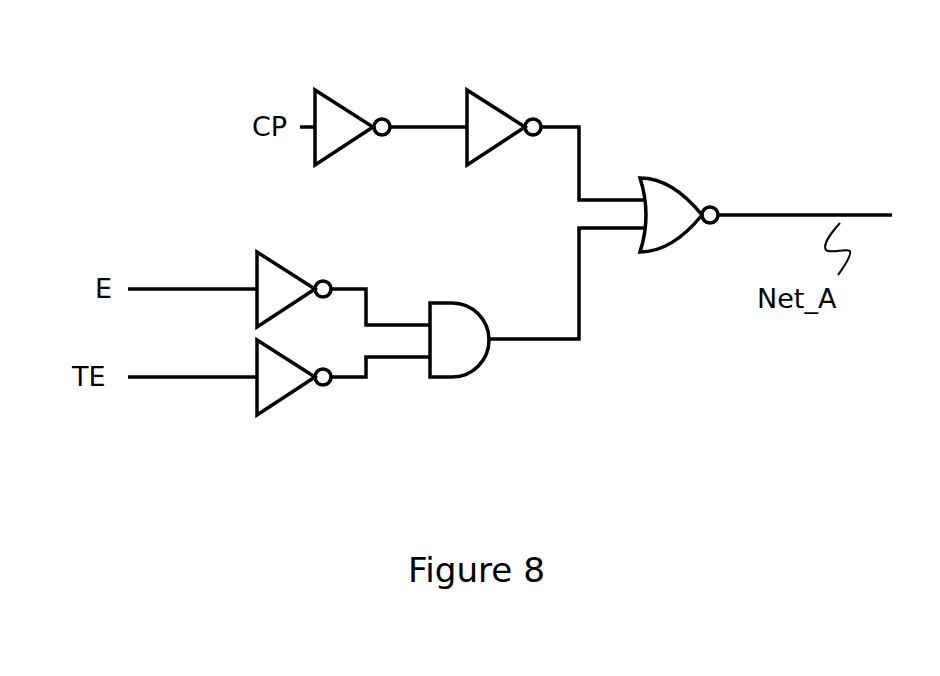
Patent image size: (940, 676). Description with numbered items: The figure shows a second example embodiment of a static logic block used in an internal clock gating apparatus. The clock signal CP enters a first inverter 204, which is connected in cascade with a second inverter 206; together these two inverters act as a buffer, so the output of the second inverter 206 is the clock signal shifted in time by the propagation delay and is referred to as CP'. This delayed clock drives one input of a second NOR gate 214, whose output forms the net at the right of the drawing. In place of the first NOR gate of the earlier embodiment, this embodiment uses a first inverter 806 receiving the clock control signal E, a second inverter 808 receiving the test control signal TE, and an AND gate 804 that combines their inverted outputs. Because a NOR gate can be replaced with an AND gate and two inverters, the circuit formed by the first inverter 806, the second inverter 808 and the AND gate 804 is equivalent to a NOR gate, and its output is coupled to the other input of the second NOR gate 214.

The first inverter 204 is at (355, 102).
The second inverter 206 is at (505, 102).
The second NOR gate 214 is at (680, 253).
The AND gate 804 is at (450, 378).
The first inverter 806 is at (295, 262).
The second inverter 808 is at (292, 403).